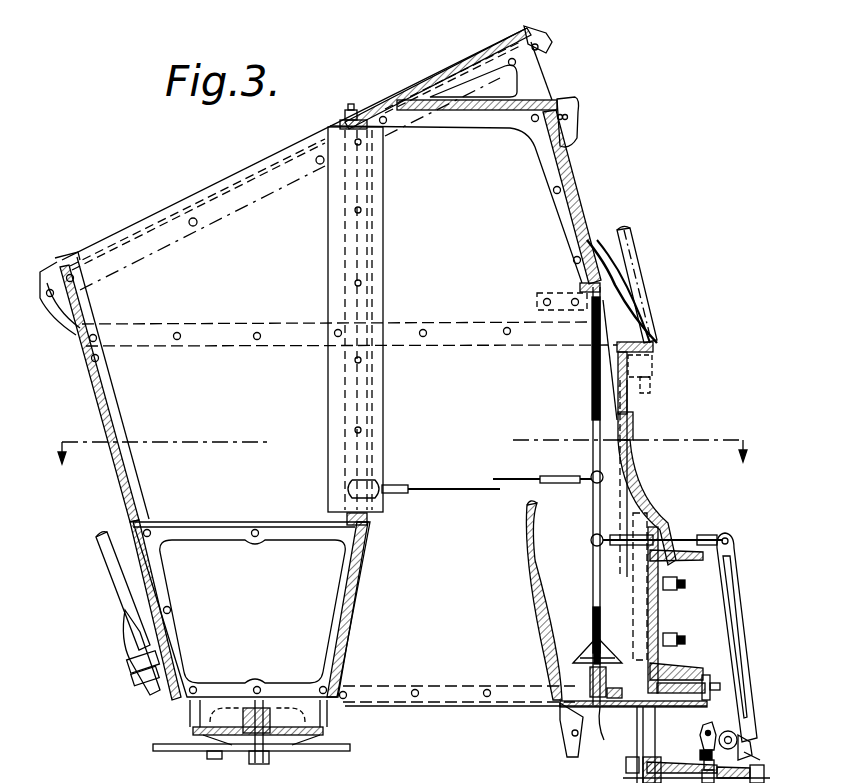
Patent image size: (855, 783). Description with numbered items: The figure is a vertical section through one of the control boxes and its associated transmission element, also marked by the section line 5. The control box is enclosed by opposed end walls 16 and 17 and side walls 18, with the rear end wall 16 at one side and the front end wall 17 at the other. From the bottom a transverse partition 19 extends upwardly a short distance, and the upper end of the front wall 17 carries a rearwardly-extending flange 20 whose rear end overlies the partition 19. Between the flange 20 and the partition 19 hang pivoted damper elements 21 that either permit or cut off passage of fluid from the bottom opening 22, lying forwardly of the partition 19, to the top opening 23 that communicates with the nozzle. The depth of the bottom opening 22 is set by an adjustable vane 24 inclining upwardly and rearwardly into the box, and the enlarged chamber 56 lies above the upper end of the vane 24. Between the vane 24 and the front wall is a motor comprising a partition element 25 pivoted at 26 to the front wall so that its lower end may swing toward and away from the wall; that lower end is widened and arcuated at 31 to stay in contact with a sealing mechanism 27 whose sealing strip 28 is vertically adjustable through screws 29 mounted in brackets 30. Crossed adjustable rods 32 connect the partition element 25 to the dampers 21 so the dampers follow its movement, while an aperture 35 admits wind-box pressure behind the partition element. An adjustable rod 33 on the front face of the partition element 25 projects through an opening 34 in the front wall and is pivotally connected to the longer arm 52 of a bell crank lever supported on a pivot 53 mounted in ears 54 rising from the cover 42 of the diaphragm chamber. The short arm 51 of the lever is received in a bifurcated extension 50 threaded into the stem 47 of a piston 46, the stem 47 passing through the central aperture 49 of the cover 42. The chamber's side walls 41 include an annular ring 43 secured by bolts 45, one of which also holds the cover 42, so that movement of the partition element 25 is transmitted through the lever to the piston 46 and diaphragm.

The section line 5- 5 is at (399, 464).
The end wall 16 is at (82, 376).
The front end wall 17 is at (575, 188).
The side walls 18 is at (349, 488).
The transverse partition 19 is at (347, 593).
The wall section or flange 20 is at (365, 112).
The damper elements 21 is at (380, 405).
The bottom opening 22 is at (515, 695).
The top opening 23 is at (238, 200).
The adjustable vane 24 is at (527, 583).
The partition element 25 is at (591, 447).
The pivot 26 is at (612, 298).
The sealing mechanism 27 is at (590, 675).
The sealing strip 28 is at (588, 660).
The screws 29 is at (613, 730).
The brackets 30 is at (663, 686).
The arcuated lower end 31 is at (607, 650).
The crossed adjustable rods 32 is at (566, 485).
The adjustable rod 33 is at (690, 537).
The opening 34 is at (667, 530).
The aperture 35 is at (660, 615).
The side walls 41 is at (704, 745).
The cover 42 is at (730, 765).
The annular ring 43 is at (766, 772).
The bolts 45 is at (744, 764).
The piston 46 is at (702, 775).
The stem 47 is at (700, 745).
The central aperture 49 is at (702, 760).
The extension 50 is at (730, 732).
The short arm 51 is at (706, 727).
The longer arm 52 is at (737, 613).
The pivot 53 is at (736, 732).
The ears 54 is at (743, 750).
The chamber 56 is at (512, 411).